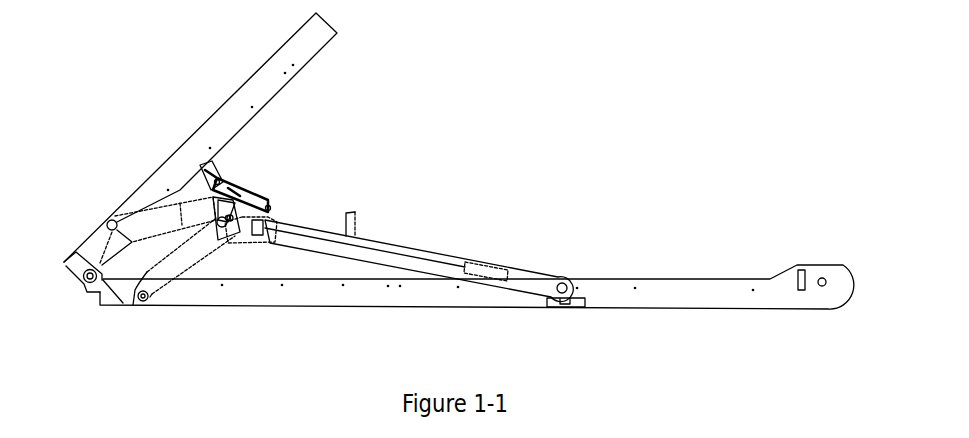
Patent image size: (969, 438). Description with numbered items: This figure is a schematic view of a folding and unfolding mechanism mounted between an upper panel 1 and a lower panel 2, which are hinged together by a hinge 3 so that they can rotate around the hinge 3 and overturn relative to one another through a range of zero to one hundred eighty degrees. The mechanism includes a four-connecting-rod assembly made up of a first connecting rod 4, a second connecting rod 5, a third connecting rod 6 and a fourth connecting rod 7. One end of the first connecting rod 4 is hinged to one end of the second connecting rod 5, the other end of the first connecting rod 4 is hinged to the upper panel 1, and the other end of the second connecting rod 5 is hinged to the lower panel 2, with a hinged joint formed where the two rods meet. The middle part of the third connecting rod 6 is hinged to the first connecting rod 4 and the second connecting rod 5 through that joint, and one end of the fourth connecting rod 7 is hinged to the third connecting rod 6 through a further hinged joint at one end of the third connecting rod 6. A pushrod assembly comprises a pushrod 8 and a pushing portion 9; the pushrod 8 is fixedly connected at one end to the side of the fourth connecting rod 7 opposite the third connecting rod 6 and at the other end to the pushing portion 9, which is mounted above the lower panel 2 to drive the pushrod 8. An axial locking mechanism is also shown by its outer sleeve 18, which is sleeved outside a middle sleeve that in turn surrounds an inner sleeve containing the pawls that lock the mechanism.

The upper panel 1 is at (188, 155).
The lower panel 2 is at (662, 290).
The hinge 3 is at (102, 302).
The first connecting rod 4 is at (165, 227).
The second connecting rod 5 is at (194, 262).
The third connecting rod 6 is at (222, 215).
The fourth connecting rod 7 is at (267, 237).
The pushrod 8 is at (383, 253).
The pushing portion 9 is at (563, 303).
The outer sleeve 18 is at (220, 155).